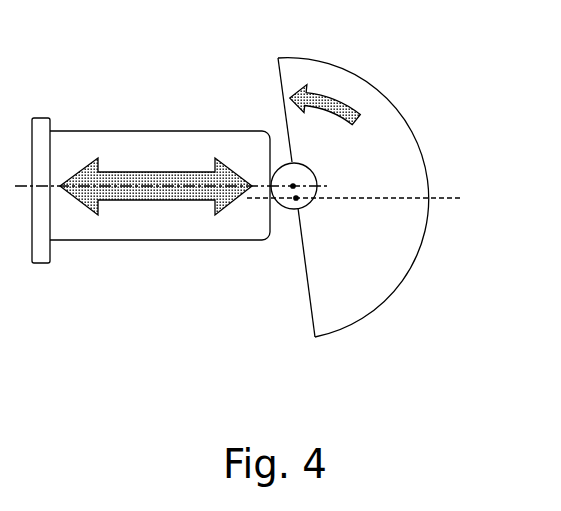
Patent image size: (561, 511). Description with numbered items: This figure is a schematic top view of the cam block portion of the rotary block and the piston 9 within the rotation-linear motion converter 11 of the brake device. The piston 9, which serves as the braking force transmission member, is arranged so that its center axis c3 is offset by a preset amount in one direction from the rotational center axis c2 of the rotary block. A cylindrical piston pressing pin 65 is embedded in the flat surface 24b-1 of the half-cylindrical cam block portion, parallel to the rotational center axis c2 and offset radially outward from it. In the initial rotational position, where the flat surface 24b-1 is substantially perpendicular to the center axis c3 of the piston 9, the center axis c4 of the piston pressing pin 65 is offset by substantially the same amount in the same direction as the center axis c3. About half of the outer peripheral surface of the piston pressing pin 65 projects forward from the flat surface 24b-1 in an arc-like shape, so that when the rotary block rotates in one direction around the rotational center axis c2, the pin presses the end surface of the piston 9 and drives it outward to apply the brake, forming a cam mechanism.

The piston 9 is at (102, 130).
The rotation-linear motion converter 11 is at (365, 172).
The piston pressing pin 65 is at (281, 157).
The flat surface 24b-1 is at (283, 108).
The rotational center axis c2 is at (296, 198).
The center axis of the piston c3 is at (59, 187).
The center axis of the piston pressing pin c4 is at (293, 186).